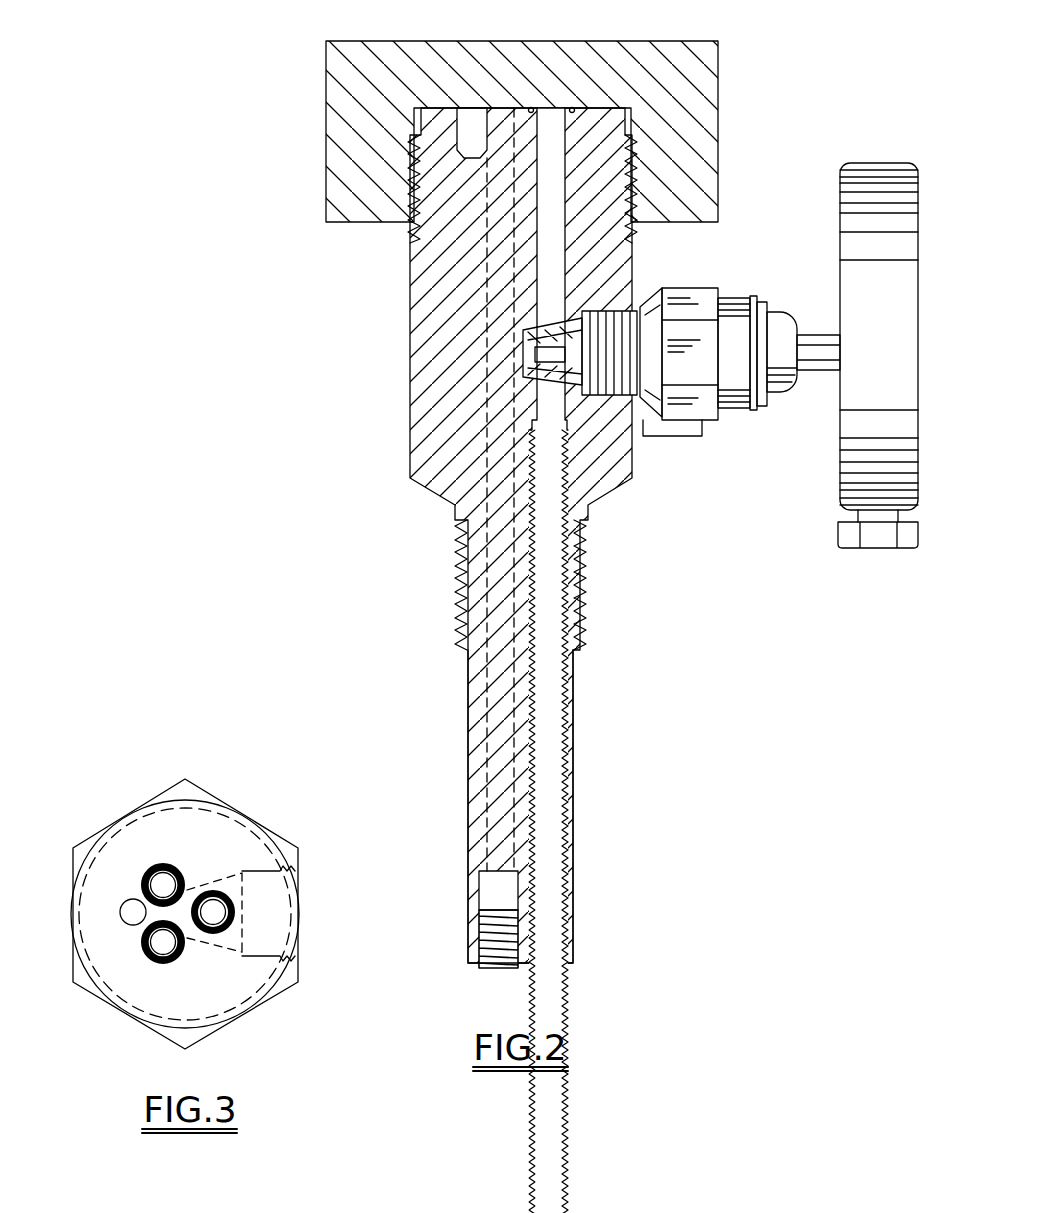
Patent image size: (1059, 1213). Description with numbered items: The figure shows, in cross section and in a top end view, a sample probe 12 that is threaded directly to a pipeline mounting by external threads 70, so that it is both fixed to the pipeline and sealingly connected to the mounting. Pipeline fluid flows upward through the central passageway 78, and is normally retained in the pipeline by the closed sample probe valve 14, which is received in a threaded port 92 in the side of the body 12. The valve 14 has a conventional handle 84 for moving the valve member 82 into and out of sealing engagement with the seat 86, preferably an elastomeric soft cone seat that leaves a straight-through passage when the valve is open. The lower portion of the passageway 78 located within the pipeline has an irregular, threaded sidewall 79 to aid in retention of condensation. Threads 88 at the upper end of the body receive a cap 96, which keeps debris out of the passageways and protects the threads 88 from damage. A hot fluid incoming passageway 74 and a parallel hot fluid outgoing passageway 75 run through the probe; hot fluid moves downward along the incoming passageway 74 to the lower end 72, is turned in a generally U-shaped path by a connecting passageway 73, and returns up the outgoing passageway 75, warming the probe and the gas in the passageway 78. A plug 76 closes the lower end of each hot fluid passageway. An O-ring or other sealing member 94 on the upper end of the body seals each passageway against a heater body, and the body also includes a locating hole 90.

In FIG. 2, the sample probe 12 is at (415, 381).
In FIG. 3, the sample probe 12 is at (295, 846).
In FIG. 2, the sample probe valve 14 is at (680, 290).
In FIG. 2, the external threads 70 is at (585, 586).
In FIG. 2, the lower end 72 is at (478, 818).
In FIG. 2, the connecting passageway 73 is at (493, 892).
In FIG. 2, the hot fluid incoming passageway 74 is at (500, 706).
In FIG. 3, the hot fluid incoming passageway 74 is at (152, 874).
In FIG. 3, the hot fluid outgoing passageway 75 is at (164, 962).
In FIG. 2, the plug 76 is at (495, 937).
In FIG. 2, the passageway 78 is at (552, 830).
In FIG. 3, the passageway 78 is at (215, 906).
In FIG. 2, the sidewall 79 is at (553, 712).
In FIG. 2, the valve member 82 is at (525, 352).
In FIG. 2, the handle 84 is at (860, 455).
In FIG. 2, the seat 86 is at (530, 323).
In FIG. 2, the threads 88 is at (630, 178).
In FIG. 2, the locating hole 90 is at (470, 130).
In FIG. 3, the locating hole 90 is at (130, 912).
In FIG. 3, the threaded port 92 is at (262, 956).
In FIG. 2, the sealing member 94 is at (536, 107).
In FIG. 3, the sealing member 94 is at (162, 868).
In FIG. 2, the cap 96 is at (700, 73).